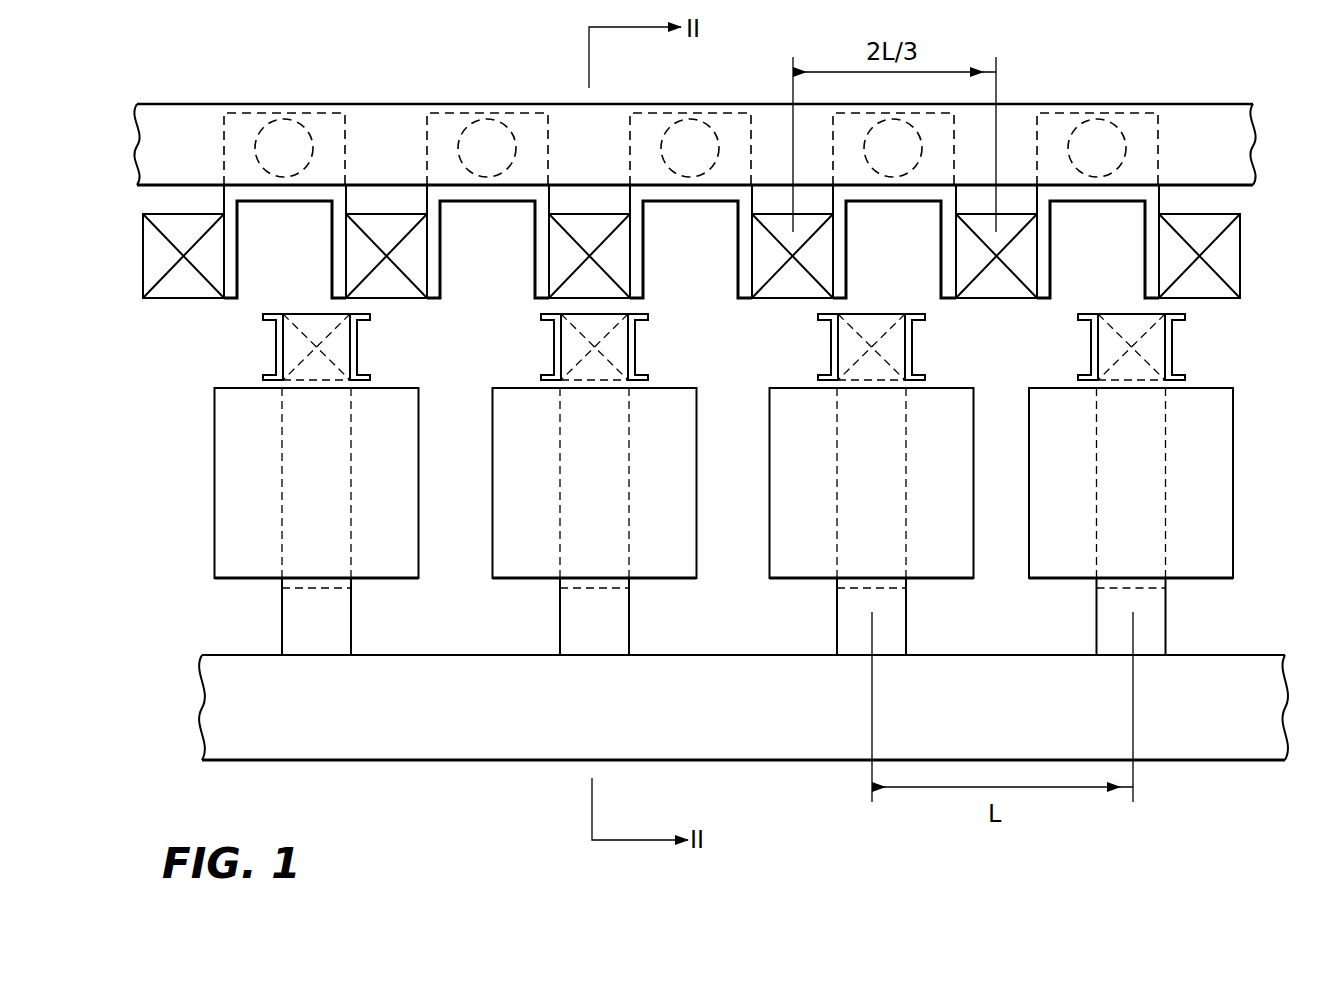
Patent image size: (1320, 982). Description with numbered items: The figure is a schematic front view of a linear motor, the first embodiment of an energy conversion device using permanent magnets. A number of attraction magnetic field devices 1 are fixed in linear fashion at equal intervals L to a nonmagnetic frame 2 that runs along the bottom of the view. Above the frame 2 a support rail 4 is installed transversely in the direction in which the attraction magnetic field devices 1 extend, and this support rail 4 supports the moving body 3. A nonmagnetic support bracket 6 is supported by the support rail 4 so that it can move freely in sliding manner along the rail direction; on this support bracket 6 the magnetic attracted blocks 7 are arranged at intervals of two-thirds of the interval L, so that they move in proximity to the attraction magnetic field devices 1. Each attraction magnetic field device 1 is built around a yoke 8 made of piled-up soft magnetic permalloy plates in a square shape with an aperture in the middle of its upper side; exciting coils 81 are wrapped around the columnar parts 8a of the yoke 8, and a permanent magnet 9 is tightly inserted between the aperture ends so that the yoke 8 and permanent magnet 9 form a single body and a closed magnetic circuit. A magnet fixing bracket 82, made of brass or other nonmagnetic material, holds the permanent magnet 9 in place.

The attraction magnetic field device 1 is at (726, 446).
The nonmagnetic frame 2 is at (510, 753).
The moving body 3 is at (717, 272).
The support rail 4 is at (1195, 110).
The nonmagnetic support bracket 6 is at (240, 186).
The magnetic attracted block 7 is at (166, 292).
The yoke 8 is at (282, 604).
The columnar part 8a is at (282, 486).
The permanent magnet 9 is at (318, 313).
The exciting coil 81 is at (214, 450).
The magnet fixing bracket 82 is at (263, 346).